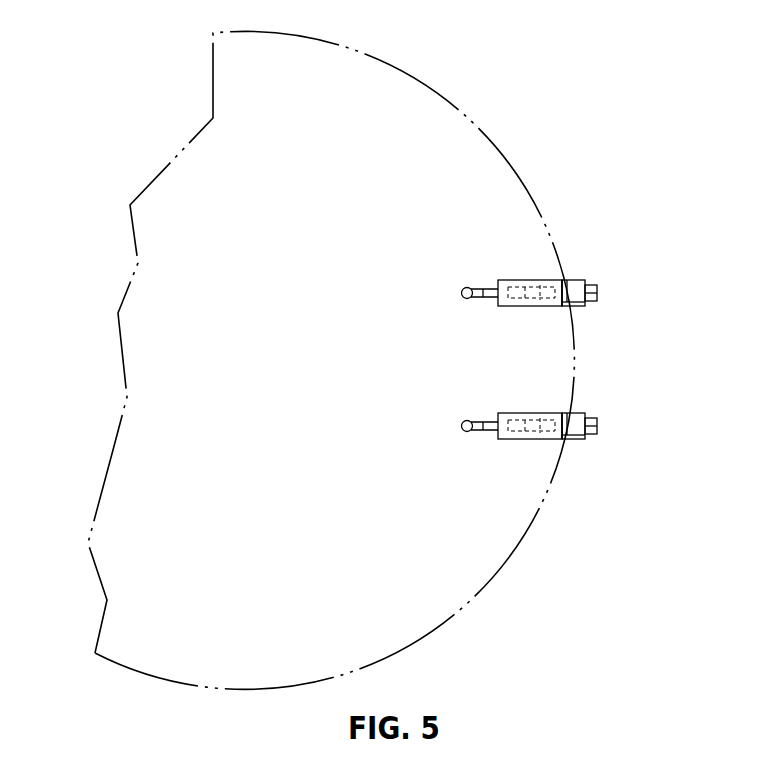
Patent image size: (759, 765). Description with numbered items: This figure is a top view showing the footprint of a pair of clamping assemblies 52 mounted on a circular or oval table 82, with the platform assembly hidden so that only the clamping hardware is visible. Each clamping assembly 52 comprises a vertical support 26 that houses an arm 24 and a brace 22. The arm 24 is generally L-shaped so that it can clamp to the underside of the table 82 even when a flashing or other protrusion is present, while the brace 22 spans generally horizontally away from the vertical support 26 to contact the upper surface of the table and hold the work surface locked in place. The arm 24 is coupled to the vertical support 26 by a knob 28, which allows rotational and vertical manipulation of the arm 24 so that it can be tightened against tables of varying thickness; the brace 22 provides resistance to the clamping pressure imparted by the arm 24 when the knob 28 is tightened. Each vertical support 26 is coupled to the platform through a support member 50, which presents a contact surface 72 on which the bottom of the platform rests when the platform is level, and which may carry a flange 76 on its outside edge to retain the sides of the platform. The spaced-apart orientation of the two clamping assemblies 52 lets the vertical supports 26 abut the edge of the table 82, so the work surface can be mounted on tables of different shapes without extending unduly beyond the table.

The circular or oval table 82 is at (371, 56).
The clamping assembly 52 is at (608, 272).
The brace 22 is at (537, 280).
The arm 24 is at (471, 298).
The vertical support 26 is at (562, 306).
The knob 28 is at (597, 293).
The support member 50 is at (578, 306).
The contact surface 72 is at (577, 288).
The flange 76 is at (566, 280).